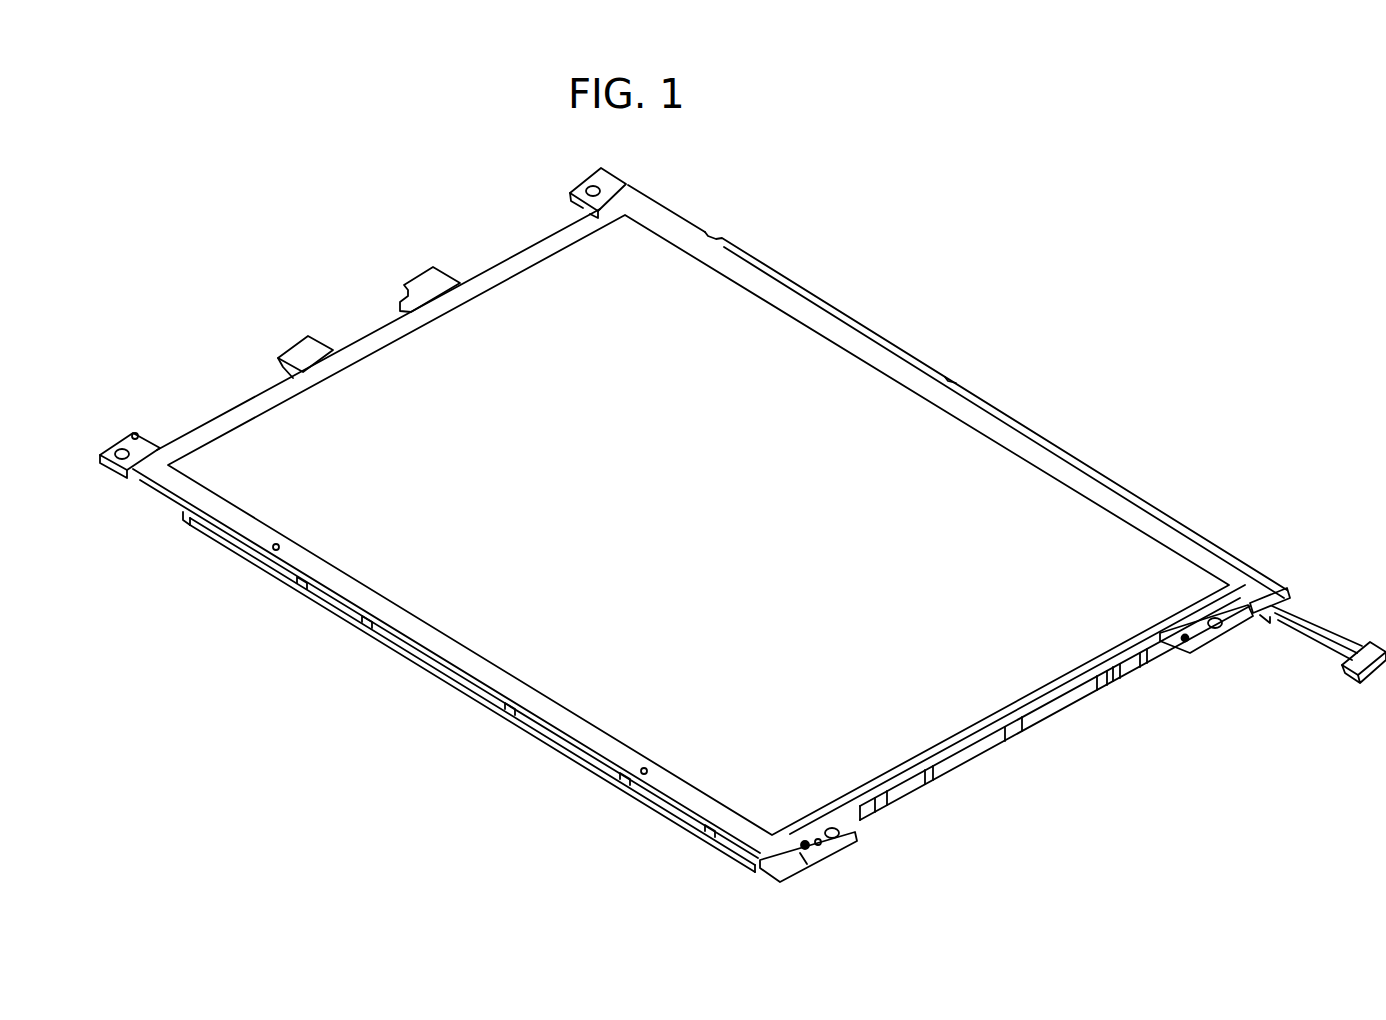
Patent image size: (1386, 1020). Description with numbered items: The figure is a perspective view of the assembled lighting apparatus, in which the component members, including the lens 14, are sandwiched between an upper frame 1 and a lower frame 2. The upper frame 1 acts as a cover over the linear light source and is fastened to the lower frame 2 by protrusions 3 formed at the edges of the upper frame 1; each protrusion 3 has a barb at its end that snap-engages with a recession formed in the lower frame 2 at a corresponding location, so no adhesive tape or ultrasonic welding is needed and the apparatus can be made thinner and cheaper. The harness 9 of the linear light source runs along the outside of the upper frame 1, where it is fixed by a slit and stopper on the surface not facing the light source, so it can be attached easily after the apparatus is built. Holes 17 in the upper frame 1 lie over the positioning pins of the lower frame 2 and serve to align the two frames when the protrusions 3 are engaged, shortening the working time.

The upper frame 1 is at (247, 405).
The lower frame 2 is at (277, 579).
The protrusions 3 is at (373, 630).
The harness 9 is at (1020, 418).
The lens 14 is at (862, 385).
The holes 17 is at (274, 549).